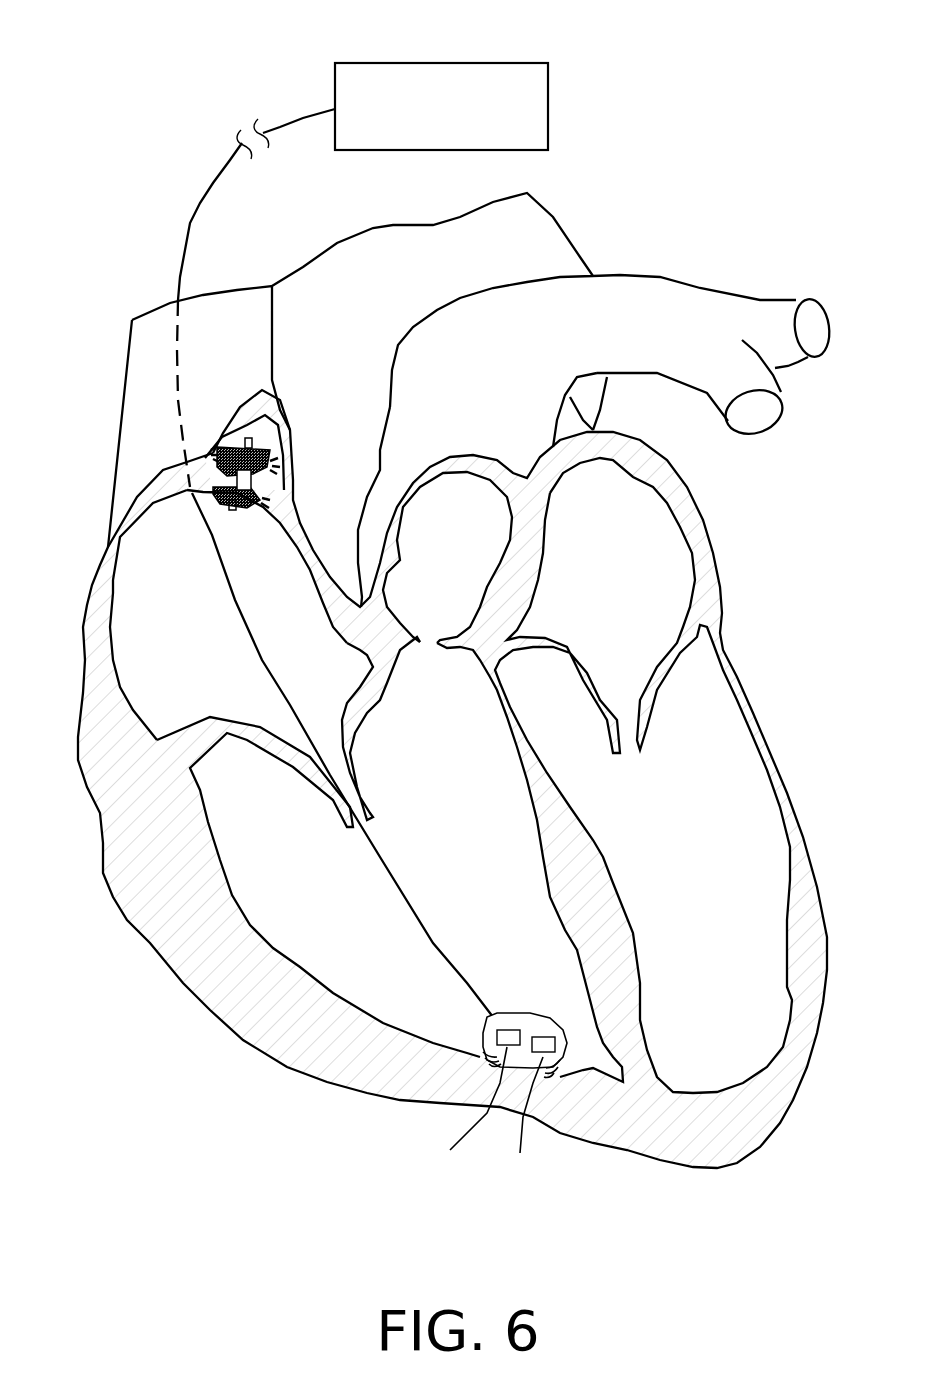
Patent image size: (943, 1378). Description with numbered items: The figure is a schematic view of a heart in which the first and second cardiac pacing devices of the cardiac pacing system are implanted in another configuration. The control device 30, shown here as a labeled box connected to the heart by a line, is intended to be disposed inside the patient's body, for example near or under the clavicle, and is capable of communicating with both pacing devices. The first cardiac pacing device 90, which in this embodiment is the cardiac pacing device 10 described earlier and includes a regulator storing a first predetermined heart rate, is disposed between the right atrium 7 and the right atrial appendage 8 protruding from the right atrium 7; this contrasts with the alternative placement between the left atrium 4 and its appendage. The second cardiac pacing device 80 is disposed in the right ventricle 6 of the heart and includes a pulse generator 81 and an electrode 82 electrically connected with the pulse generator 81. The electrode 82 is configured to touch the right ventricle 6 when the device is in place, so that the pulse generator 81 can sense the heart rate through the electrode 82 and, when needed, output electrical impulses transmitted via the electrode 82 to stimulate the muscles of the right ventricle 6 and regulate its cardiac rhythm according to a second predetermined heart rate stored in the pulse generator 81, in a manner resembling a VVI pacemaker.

The control device 30 is at (473, 63).
The right atrial appendage 8 is at (256, 430).
The cardiac pacing device 10 is at (289, 425).
The first cardiac pacing device 90 is at (267, 452).
The right atrium 7 is at (180, 604).
The right ventricle 6 is at (366, 952).
The left atrium 4 is at (632, 585).
The second cardiac pacing device 80 is at (530, 1013).
The pulse generator 81 is at (468, 1122).
The electrode 82 is at (527, 1128).